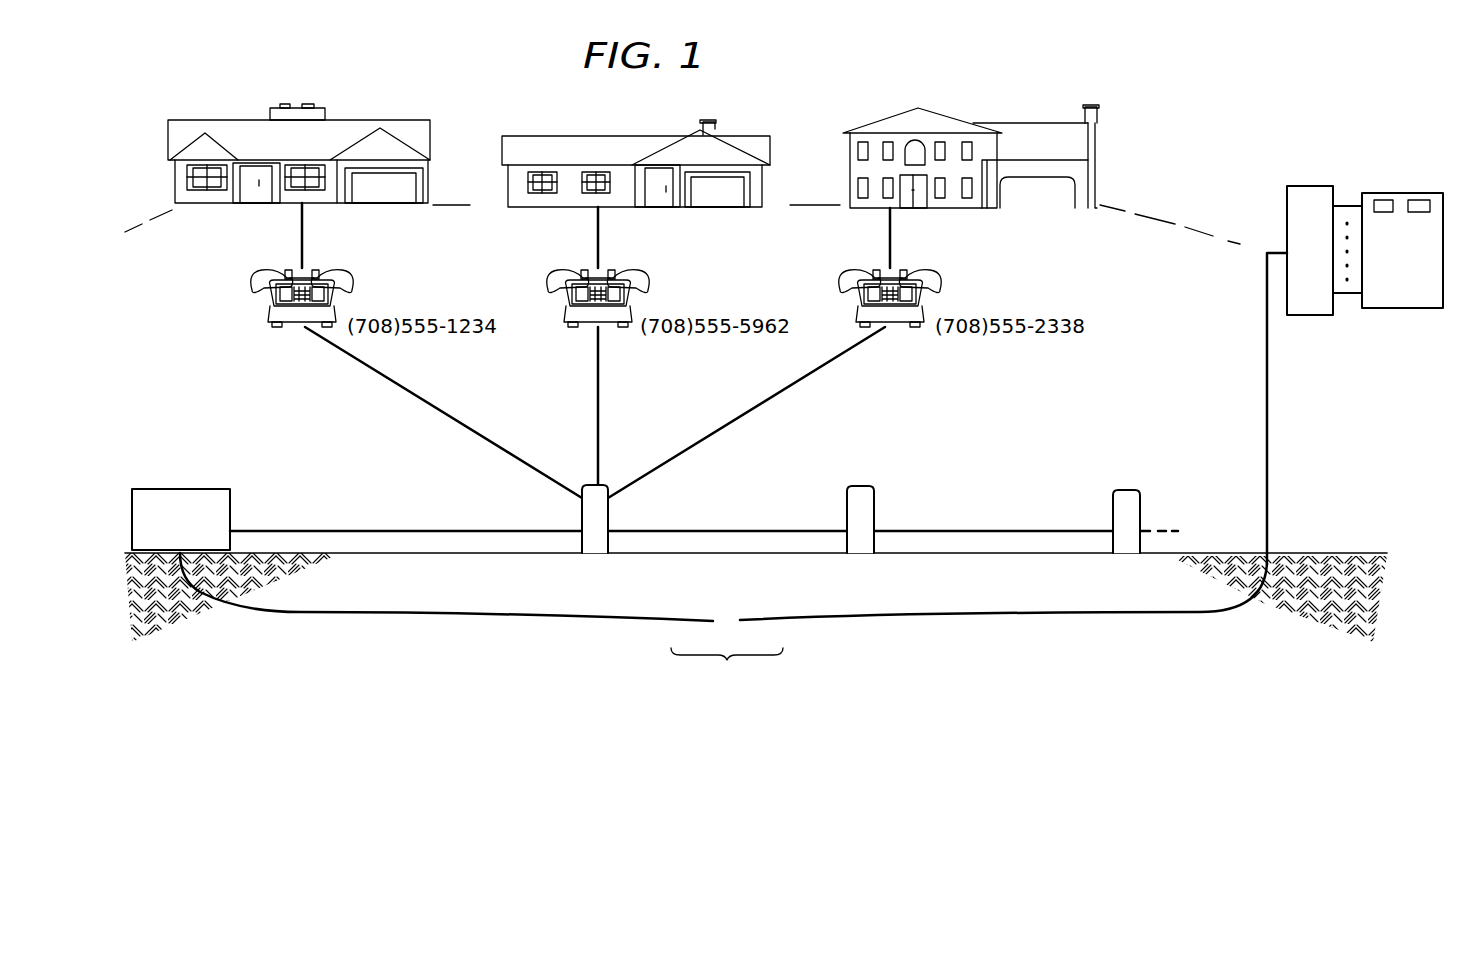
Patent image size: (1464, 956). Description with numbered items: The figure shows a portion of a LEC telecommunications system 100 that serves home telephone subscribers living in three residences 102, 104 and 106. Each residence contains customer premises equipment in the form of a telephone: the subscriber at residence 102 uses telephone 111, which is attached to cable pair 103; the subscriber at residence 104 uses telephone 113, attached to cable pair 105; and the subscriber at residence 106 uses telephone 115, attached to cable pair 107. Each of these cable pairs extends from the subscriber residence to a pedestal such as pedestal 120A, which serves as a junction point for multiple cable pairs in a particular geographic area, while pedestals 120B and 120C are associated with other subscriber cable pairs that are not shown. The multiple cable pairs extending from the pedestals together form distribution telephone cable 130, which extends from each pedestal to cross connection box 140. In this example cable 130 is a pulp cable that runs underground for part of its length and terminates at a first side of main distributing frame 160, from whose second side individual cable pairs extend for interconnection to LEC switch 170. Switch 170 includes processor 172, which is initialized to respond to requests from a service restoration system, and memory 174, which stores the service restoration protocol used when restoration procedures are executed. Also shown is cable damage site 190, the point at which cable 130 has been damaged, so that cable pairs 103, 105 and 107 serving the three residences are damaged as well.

The telecommunications system 100 is at (1210, 130).
The residence 102 is at (360, 121).
The residence 104 is at (601, 137).
The residence 106 is at (946, 118).
The telephone 111 is at (358, 295).
The telephone 113 is at (653, 295).
The telephone 115 is at (948, 295).
The cable pair 103 is at (491, 440).
The cable pair 105 is at (600, 403).
The cable pair 107 is at (715, 437).
The pedestal 120A is at (600, 512).
The pedestal 120B is at (866, 514).
The pedestal 120C is at (1132, 514).
The distribution telephone cable 130 is at (398, 530).
The cross connection box 140 is at (187, 489).
The main distributing frame 160 is at (1312, 186).
The LEC switch 170 is at (1405, 308).
The processor 172 is at (1384, 200).
The memory 174 is at (1426, 200).
The cable damage site 190 is at (626, 648).